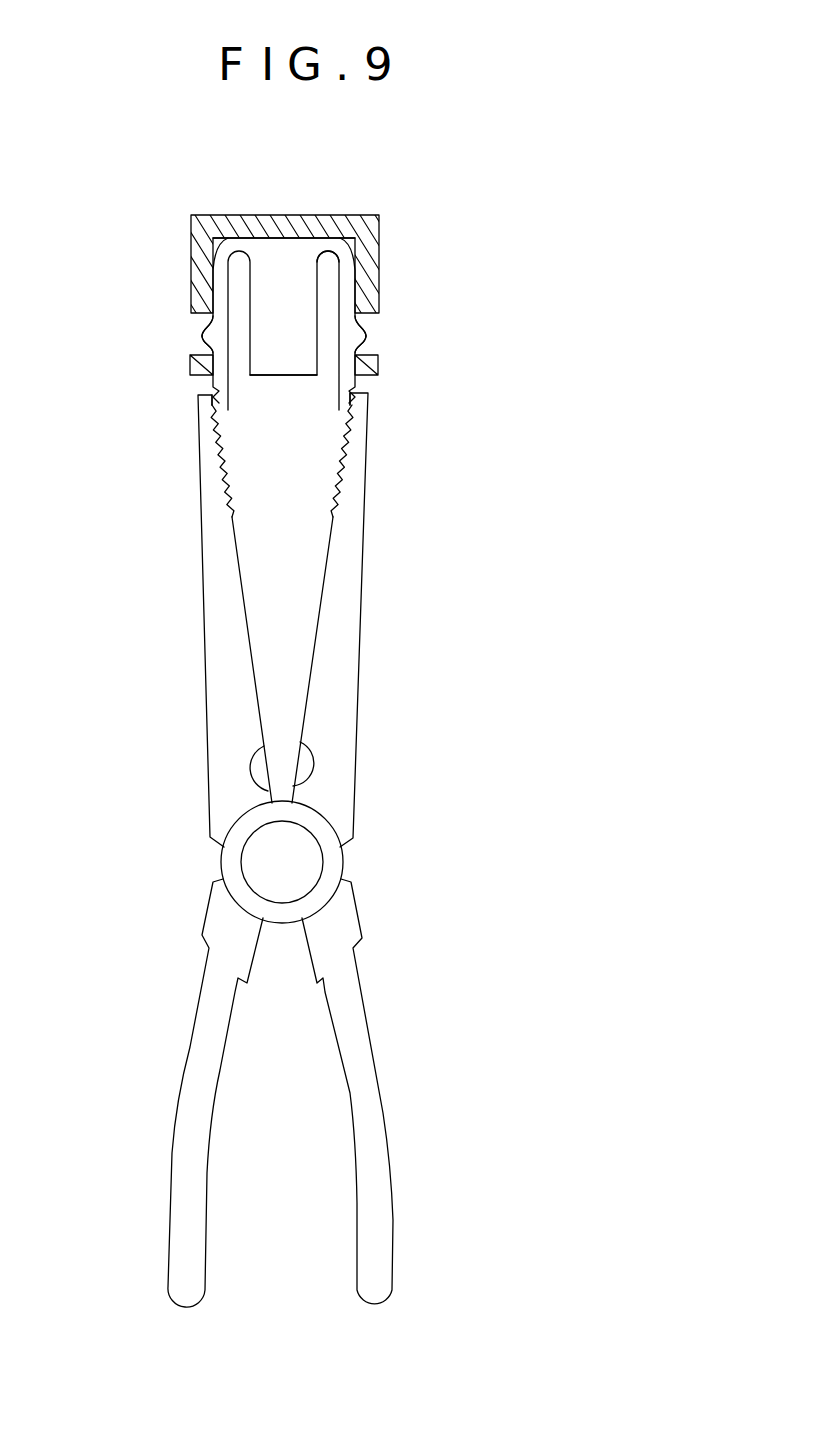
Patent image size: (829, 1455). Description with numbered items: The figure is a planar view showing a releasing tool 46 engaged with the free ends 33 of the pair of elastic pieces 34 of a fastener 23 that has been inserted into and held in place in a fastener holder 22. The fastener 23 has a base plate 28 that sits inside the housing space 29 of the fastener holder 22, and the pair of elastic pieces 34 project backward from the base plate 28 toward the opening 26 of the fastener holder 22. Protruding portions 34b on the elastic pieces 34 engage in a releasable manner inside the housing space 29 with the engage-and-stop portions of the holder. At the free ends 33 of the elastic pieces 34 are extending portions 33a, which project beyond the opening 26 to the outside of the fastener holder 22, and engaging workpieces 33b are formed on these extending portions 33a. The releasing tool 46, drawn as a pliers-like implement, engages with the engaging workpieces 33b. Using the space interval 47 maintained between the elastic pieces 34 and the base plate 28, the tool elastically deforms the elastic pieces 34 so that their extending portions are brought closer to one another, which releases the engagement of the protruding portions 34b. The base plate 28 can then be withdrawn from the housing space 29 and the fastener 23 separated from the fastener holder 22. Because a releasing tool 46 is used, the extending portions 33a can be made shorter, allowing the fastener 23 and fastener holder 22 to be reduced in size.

The fastener holder 22 is at (374, 210).
The fastener 23 is at (270, 388).
The opening 26 is at (303, 385).
The base plate 28 is at (281, 270).
The housing space 29 is at (355, 250).
The free end 33 is at (215, 428).
The extending portion 33a is at (281, 399).
The engaging workpiece 33b is at (212, 383).
The elastic piece 34 is at (201, 318).
The protruding portion 34b is at (203, 340).
The releasing tool 46 is at (358, 737).
The space interval 47 is at (238, 372).